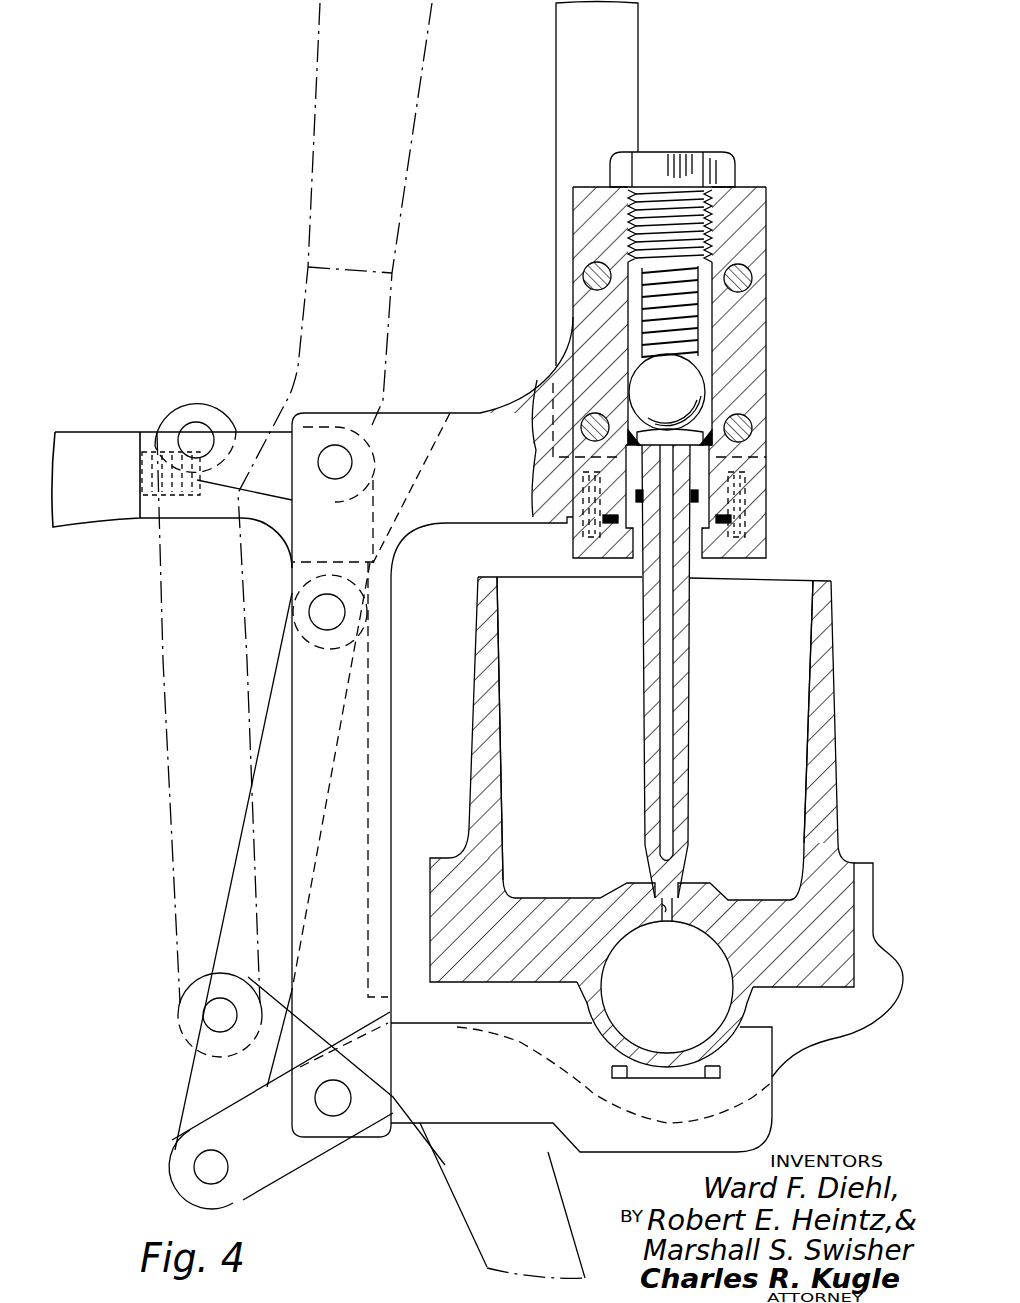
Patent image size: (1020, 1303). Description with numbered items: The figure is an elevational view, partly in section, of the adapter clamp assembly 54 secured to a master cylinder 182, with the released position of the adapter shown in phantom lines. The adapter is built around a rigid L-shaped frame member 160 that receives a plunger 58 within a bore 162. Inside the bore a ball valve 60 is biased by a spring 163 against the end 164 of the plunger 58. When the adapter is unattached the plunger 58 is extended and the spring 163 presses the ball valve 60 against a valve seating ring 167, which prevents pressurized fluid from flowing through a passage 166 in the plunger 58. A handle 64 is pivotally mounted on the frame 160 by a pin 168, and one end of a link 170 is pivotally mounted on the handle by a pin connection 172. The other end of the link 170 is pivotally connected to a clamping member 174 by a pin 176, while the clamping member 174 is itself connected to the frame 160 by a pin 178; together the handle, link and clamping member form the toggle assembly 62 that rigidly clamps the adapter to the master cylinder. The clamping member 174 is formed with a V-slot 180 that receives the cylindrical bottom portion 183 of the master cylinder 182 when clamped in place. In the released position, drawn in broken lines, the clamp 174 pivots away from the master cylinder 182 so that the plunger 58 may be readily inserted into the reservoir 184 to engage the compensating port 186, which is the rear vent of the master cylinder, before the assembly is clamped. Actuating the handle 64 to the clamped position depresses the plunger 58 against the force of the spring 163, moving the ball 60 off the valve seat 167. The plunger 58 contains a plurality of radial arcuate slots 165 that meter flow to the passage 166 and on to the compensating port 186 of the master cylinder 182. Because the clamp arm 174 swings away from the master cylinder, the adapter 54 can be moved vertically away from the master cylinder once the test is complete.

The adapter clamp assembly 54 is at (708, 206).
The plunger 58 is at (648, 662).
The ball valve 60 is at (692, 380).
The toggle assembly 62 is at (314, 543).
The handle 64 is at (320, 216).
The rigid L-shaped frame member 160 is at (476, 410).
The bore 162 is at (703, 318).
The spring 163 is at (640, 303).
The end of plunger 164 is at (698, 405).
The radial arcuate slots 165 is at (745, 462).
The passage 166 is at (673, 612).
The valve seating ring 167 is at (712, 436).
The pin 168 is at (340, 458).
The link 170 is at (272, 745).
The pin connection 172 is at (337, 612).
The clamping member 174 is at (492, 1098).
The pin 176 is at (205, 1153).
The pin 178 is at (330, 1110).
The V-slot 180 is at (716, 1050).
The master cylinder 182 is at (823, 778).
The cylindrical portion of master cylinder 183 is at (742, 1005).
The reservoir 184 is at (800, 676).
The compensating port 186 is at (648, 900).